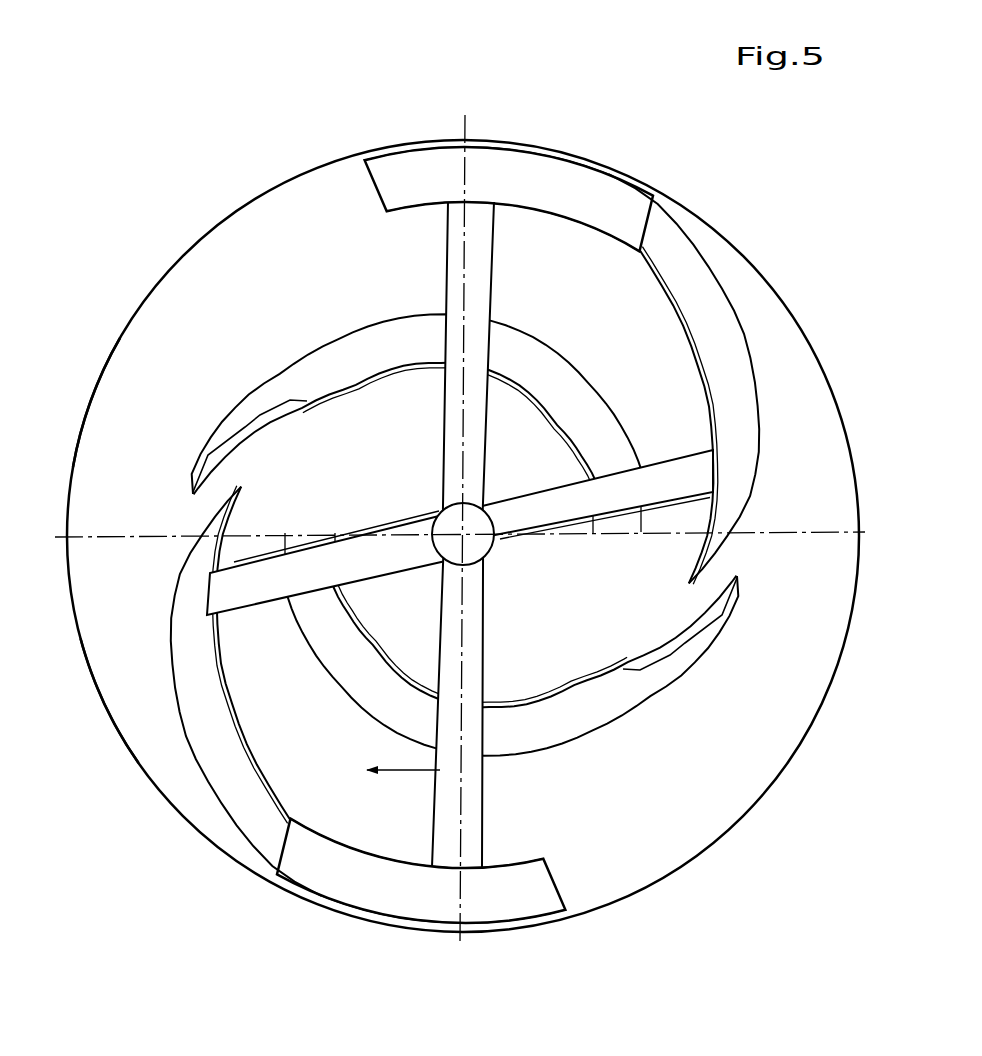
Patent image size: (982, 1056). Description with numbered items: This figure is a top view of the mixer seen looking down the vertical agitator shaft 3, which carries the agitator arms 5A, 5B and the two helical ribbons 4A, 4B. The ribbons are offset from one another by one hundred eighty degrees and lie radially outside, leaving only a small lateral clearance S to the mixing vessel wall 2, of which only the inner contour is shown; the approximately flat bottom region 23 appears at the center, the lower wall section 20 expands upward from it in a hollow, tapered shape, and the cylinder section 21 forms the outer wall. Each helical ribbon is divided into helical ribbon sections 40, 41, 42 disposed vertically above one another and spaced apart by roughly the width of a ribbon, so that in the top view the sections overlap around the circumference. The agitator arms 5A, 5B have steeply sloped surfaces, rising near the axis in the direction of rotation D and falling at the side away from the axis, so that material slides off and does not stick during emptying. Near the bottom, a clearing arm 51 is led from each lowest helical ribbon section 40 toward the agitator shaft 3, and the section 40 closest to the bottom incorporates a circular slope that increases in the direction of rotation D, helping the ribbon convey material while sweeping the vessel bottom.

The mixing vessel wall 2 is at (204, 236).
The lower wall section 20 is at (84, 433).
The cylinder section 21 is at (100, 613).
The lateral clearance S is at (400, 145).
The helical ribbon 4A is at (370, 191).
The helical ribbon 4B is at (560, 878).
The helical ribbon section 42 is at (567, 191).
The agitator arm 5A is at (545, 499).
The agitator arm 5B is at (493, 309).
The agitator shaft 3 is at (488, 556).
The bottom region 23 is at (420, 622).
The helical ribbon section 40 is at (548, 368).
The helical ribbon section 41 is at (709, 360).
The clearing arm 51 is at (555, 547).
The direction of rotation D is at (391, 770).